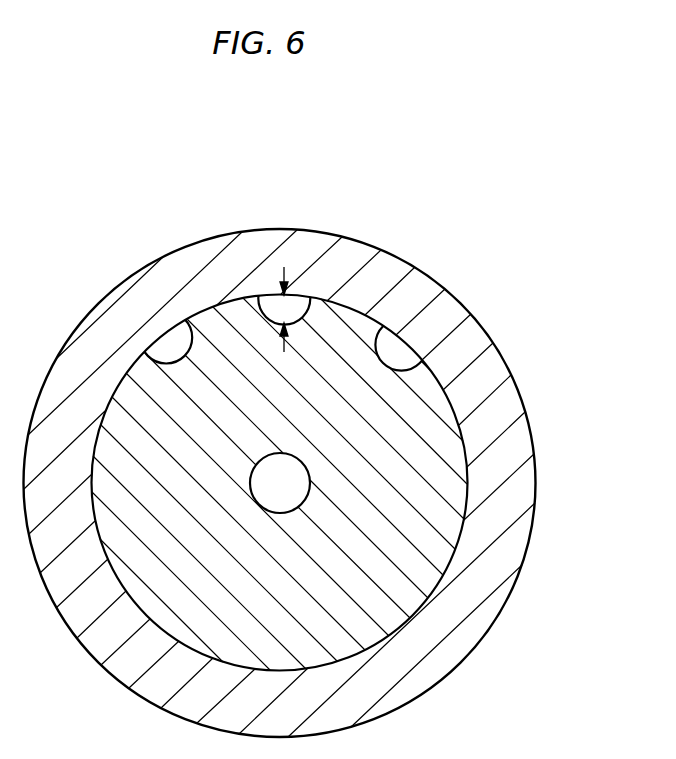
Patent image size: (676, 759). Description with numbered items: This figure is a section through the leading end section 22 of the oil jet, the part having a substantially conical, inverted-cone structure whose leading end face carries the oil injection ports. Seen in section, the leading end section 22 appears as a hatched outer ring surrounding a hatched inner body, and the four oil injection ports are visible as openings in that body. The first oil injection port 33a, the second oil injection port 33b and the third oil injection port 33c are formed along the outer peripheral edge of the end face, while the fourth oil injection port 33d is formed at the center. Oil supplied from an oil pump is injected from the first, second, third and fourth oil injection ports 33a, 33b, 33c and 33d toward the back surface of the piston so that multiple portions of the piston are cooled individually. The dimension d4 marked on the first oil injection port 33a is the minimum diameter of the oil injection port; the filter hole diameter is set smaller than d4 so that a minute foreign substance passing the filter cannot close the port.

The leading end section 22 is at (501, 354).
The first oil injection port 33a is at (272, 308).
The second oil injection port 33b is at (166, 340).
The third oil injection port 33c is at (393, 342).
The fourth oil injection port 33d is at (295, 485).
The minimum diameter of the oil injection port d4 is at (292, 307).